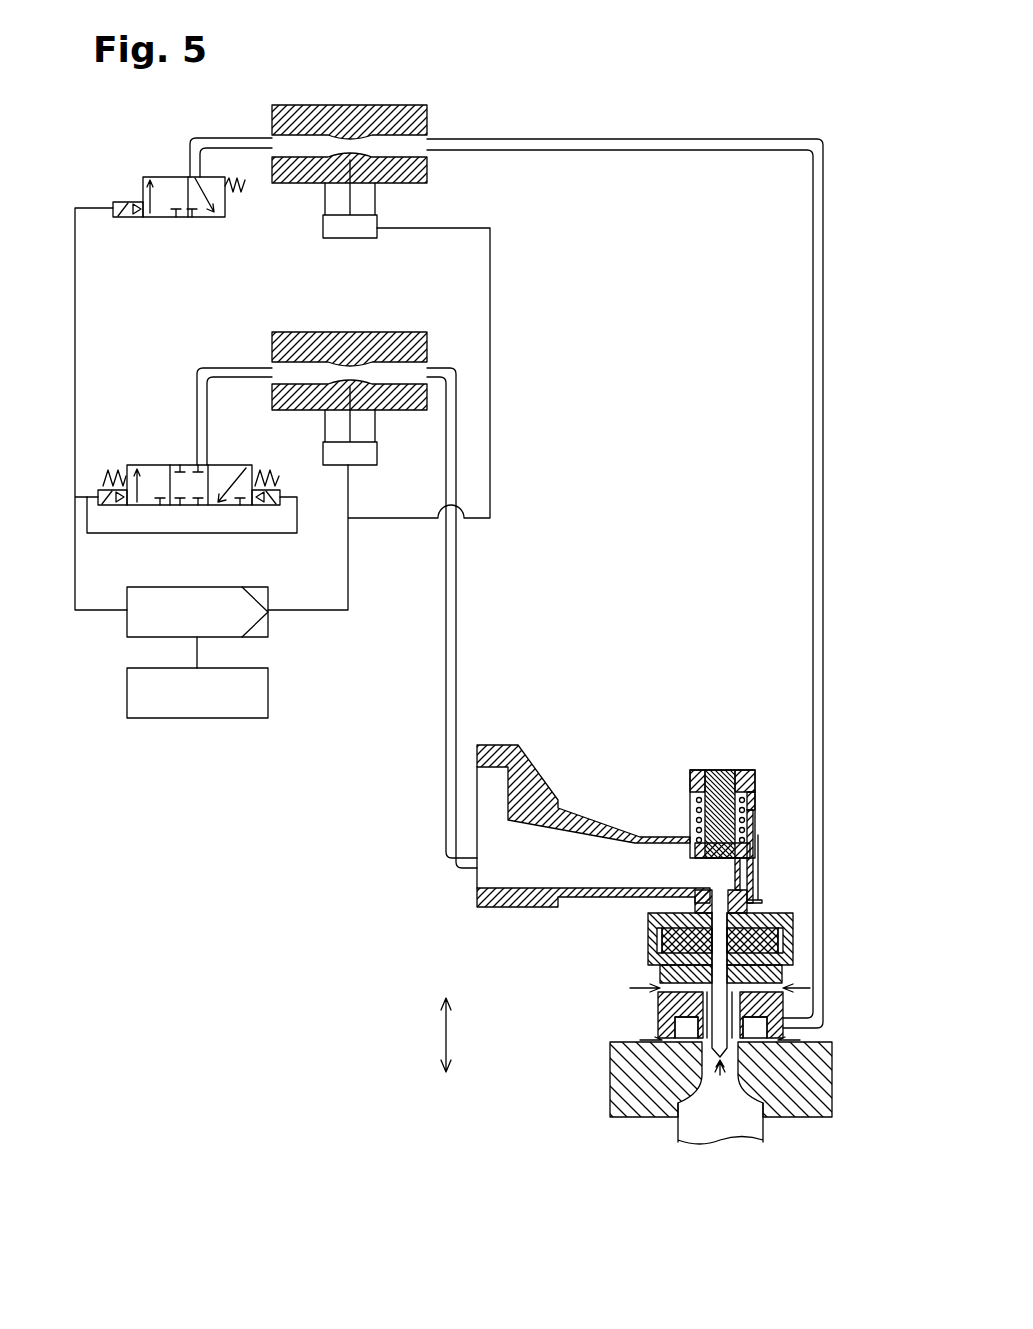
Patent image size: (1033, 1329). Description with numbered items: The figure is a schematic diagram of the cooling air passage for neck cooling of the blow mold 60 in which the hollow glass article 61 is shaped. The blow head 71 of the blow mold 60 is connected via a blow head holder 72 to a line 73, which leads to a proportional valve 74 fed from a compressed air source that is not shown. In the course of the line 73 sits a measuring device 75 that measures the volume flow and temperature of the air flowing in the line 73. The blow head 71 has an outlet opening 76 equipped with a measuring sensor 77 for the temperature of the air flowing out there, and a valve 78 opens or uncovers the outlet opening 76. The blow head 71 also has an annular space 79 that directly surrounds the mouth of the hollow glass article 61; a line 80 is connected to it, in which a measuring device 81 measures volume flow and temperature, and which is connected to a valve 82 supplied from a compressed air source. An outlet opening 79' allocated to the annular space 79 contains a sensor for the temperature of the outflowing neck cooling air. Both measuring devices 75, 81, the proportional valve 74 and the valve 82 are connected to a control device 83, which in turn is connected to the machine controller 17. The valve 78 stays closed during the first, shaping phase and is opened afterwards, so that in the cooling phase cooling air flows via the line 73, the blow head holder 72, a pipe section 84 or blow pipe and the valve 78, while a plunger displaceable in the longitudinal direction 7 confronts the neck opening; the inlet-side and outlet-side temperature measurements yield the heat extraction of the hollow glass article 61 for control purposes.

The longitudinal direction 7 is at (444, 1035).
The machine controller 17 is at (268, 690).
The blow mold 60 is at (620, 1078).
The hollow glass article 61 is at (730, 1112).
The blow head 71 is at (760, 945).
The blow head holder 72 is at (593, 850).
The line 73 is at (258, 370).
The proportional valve 74 is at (150, 472).
The measuring device 75 is at (349, 350).
The outlet opening 76 is at (657, 995).
The measuring sensor 77 is at (653, 953).
The valve 78 is at (660, 983).
The annular space 79 is at (653, 1035).
The outlet opening 79' is at (670, 1096).
The line 80 is at (258, 143).
The measuring device 81 is at (348, 124).
The valve 82 is at (220, 200).
The control device 83 is at (268, 625).
The pipe section 84 is at (768, 1060).